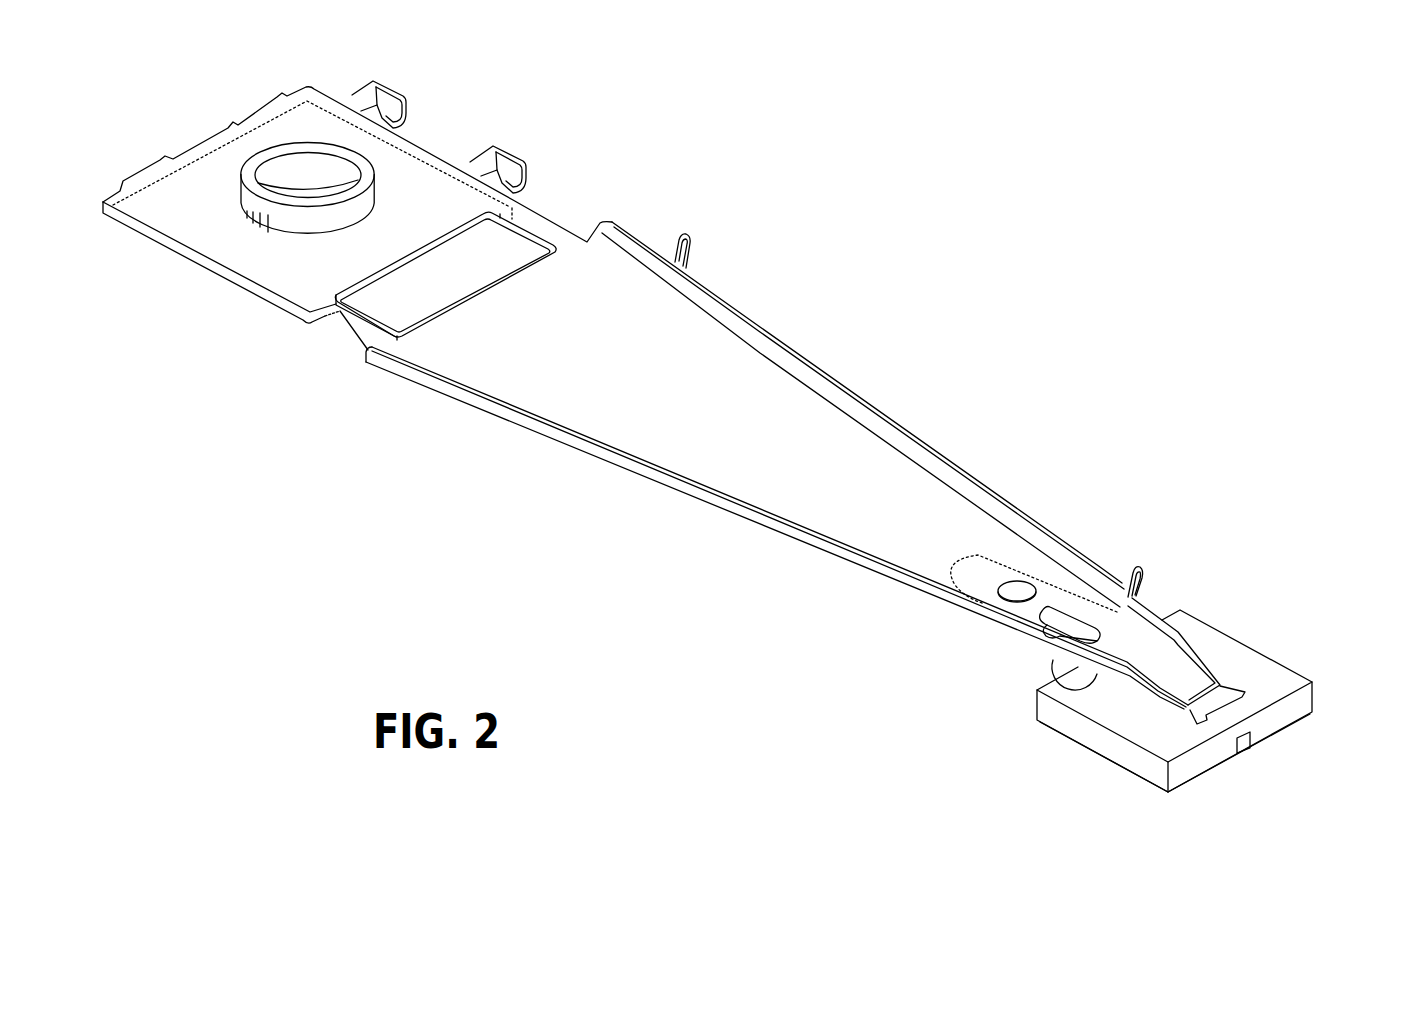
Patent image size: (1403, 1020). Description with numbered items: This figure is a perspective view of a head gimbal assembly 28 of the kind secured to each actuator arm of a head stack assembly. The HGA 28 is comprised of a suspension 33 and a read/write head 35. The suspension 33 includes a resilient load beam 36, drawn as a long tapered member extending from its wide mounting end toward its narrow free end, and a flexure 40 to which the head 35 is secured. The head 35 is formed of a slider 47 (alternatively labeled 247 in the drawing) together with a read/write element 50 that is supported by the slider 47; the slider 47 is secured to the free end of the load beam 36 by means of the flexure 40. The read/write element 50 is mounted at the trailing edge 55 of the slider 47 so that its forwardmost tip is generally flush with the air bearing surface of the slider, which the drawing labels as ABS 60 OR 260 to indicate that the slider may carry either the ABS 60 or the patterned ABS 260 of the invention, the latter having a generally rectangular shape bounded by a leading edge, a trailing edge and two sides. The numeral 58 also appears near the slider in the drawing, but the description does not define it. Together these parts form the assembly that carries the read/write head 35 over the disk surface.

The head gimbal assembly 28 is at (827, 218).
The load beam 36 is at (812, 432).
The suspension 33 is at (1017, 494).
The read/write head 35 is at (1203, 608).
The flexure 40 is at (1078, 664).
The slider 47 is at (1204, 717).
The slider 247 is at (1238, 640).
The trailing edge 55 is at (1313, 712).
The read/write element 50 is at (1243, 750).
The slider leading edge 58 is at (1120, 693).
The ABS 60 is at (1175, 783).
The ABS 260 is at (1197, 777).